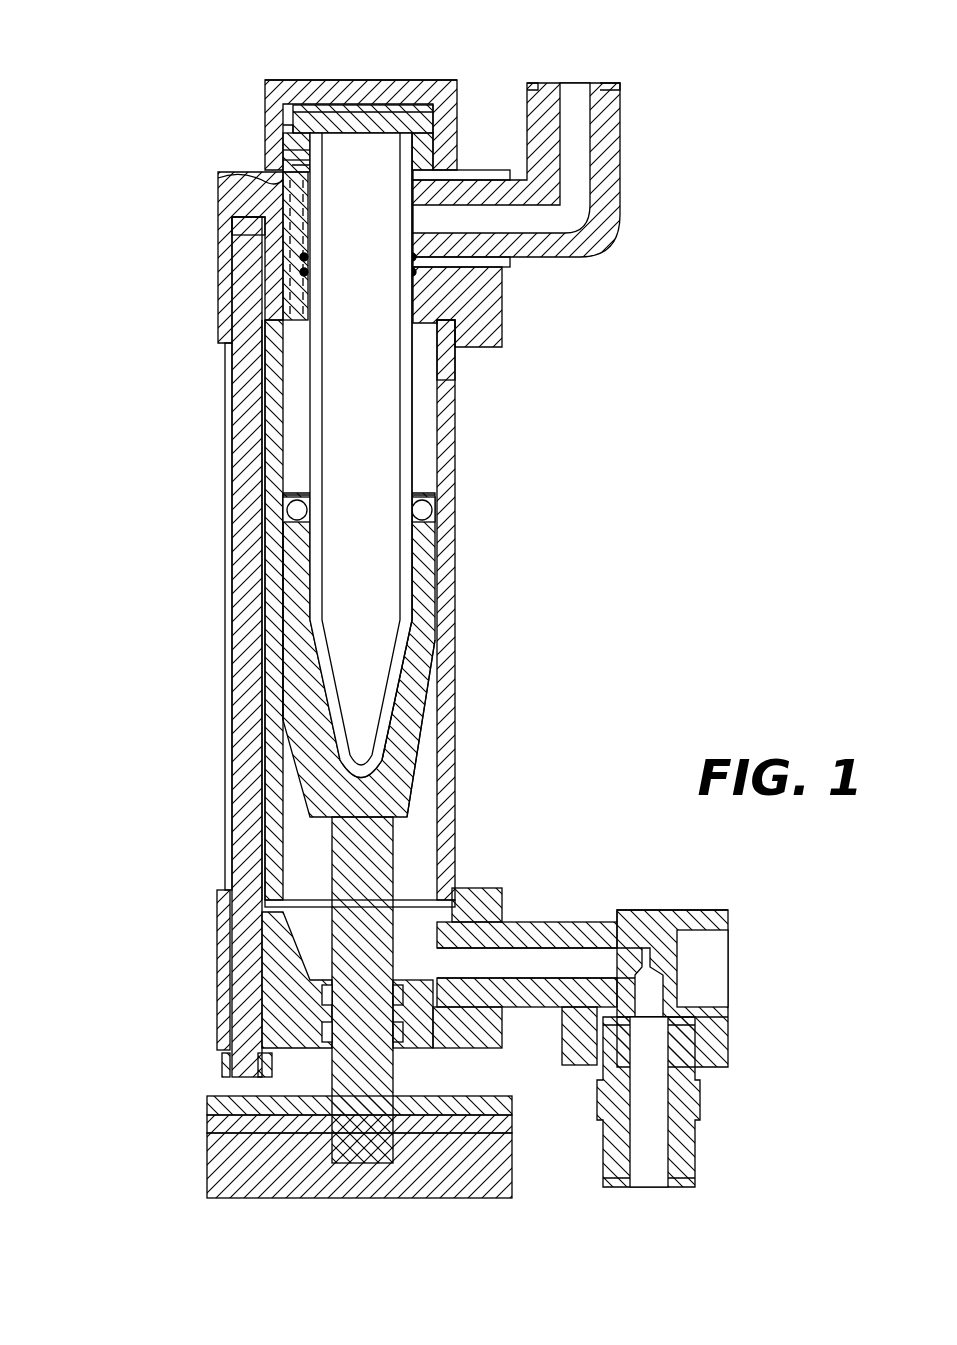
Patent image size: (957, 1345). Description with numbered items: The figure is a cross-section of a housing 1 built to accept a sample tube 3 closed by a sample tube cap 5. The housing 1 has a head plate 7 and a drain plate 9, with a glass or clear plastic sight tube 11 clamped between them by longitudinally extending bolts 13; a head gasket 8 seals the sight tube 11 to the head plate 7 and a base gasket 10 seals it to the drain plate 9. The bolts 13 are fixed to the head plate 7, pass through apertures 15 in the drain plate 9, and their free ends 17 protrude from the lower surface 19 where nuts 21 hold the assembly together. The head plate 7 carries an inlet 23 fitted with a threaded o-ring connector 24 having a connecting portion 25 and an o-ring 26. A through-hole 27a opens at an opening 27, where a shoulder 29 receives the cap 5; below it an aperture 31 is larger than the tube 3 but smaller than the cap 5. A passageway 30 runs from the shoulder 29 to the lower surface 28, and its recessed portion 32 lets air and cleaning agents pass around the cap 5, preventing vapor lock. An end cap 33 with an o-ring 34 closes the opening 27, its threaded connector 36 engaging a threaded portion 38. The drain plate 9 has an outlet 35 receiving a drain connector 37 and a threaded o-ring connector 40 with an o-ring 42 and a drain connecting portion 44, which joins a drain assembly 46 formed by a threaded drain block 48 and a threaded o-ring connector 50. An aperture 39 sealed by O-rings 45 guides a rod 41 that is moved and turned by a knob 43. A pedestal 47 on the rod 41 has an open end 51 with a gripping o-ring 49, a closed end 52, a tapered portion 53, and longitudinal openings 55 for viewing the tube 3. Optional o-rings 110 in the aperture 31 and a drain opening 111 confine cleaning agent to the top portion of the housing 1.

The housing 1 is at (98, 382).
The sample tube 3 is at (413, 440).
The sample tube cap 5 is at (410, 100).
The head plate 7 is at (218, 205).
The head gasket 8 is at (455, 338).
The drain plate 9 is at (500, 900).
The base gasket 10 is at (440, 885).
The sight tube 11 is at (456, 580).
The bolts 13 is at (235, 822).
The apertures 15 is at (228, 968).
The free ends 17 is at (262, 1075).
The lower surface 19 is at (505, 1045).
The nuts 21 is at (222, 1047).
The inlet 23 is at (473, 270).
The threaded o-ring connector 24 is at (605, 215).
The connecting portion 25 is at (500, 175).
The o-ring 26 is at (457, 170).
The opening 27 is at (355, 150).
The through-hole 27a is at (282, 130).
The lower surface 28 is at (250, 328).
The shoulder 29 is at (300, 172).
The passageway 30 is at (262, 180).
The aperture 31 is at (300, 282).
The recessed portion 32 is at (330, 158).
The end cap 33 is at (365, 95).
The o-ring 34 is at (285, 125).
The outlet 35 is at (480, 922).
The threaded connector 36 is at (250, 103).
The drain connector 37 is at (563, 913).
The threaded portion 38 is at (290, 128).
The aperture 39 is at (325, 1047).
The threaded o-ring connector 40 is at (465, 1027).
The rod 41 is at (400, 835).
The o-ring 42 is at (505, 1112).
The knob 43 is at (330, 1198).
The drain connecting portion 44 is at (695, 910).
The O-rings 45 is at (410, 1007).
The drain assembly 46 is at (735, 1040).
The pedestal 47 is at (413, 733).
The threaded drain block 48 is at (740, 1000).
The o-ring 49 is at (430, 510).
The threaded o-ring connector 50 is at (695, 1145).
The open end 51 is at (437, 483).
The closed end 52 is at (420, 775).
The tapered portion 53 is at (262, 740).
The longitudinal openings 55 is at (338, 575).
The o-rings 110 is at (300, 262).
The drain opening 111 is at (250, 232).